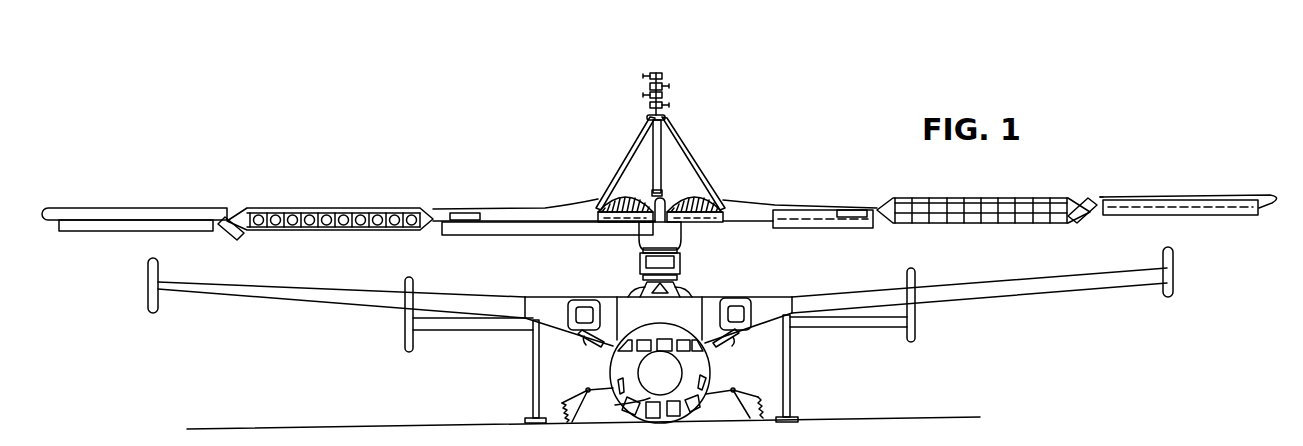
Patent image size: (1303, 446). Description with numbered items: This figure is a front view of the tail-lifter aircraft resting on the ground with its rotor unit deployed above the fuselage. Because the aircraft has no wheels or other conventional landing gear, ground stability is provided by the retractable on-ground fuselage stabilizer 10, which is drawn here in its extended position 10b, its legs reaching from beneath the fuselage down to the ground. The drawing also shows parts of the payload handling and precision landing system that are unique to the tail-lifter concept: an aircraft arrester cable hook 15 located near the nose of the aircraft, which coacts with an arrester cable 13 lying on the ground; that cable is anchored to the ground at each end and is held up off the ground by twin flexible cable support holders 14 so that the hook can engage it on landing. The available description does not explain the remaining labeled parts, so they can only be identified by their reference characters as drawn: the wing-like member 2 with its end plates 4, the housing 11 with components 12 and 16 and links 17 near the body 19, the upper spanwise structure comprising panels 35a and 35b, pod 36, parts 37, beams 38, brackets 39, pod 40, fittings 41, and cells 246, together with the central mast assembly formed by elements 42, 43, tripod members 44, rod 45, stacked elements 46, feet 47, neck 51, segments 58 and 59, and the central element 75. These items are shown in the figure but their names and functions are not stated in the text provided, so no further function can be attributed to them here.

The wing 2 is at (945, 282).
The wing tip end plate 4 is at (148, 300).
The retractable on-ground fuselage stabilizer 10 is at (532, 390).
The extended position of fuselage stabilizer 10b is at (790, 385).
The engine housing 11 is at (619, 345).
The nozzle vane 12 is at (698, 405).
The arrester cable 13 is at (605, 385).
The flexible cable support holders 14 is at (574, 393).
The aircraft arrester cable hook 15 is at (632, 405).
The tank 16 is at (580, 300).
The link 17 is at (583, 340).
The fuselage body 19 is at (658, 320).
The wing panel 35a is at (197, 208).
The wing panel 35b is at (1112, 199).
The pod 36 is at (390, 212).
The flap panel 37 is at (103, 232).
The support beam 38 is at (545, 234).
The bracket 39 is at (240, 237).
The container pod 40 is at (940, 205).
The latch 41 is at (478, 213).
The mast block 42 is at (683, 264).
The mast coupling 43 is at (683, 226).
The tripod strut 44 is at (614, 167).
The mast rod 45 is at (653, 175).
The antenna element 46 is at (645, 95).
The base foot 47 is at (632, 293).
The pivot 51 is at (666, 200).
The bearing segment 58 is at (715, 196).
The bearing segment 59 is at (600, 201).
The propeller hub 75 is at (660, 373).
The compartment cell 246 is at (344, 206).